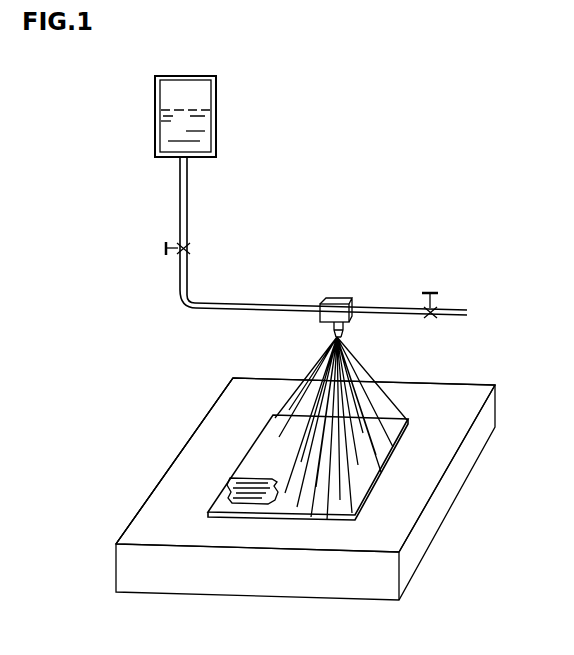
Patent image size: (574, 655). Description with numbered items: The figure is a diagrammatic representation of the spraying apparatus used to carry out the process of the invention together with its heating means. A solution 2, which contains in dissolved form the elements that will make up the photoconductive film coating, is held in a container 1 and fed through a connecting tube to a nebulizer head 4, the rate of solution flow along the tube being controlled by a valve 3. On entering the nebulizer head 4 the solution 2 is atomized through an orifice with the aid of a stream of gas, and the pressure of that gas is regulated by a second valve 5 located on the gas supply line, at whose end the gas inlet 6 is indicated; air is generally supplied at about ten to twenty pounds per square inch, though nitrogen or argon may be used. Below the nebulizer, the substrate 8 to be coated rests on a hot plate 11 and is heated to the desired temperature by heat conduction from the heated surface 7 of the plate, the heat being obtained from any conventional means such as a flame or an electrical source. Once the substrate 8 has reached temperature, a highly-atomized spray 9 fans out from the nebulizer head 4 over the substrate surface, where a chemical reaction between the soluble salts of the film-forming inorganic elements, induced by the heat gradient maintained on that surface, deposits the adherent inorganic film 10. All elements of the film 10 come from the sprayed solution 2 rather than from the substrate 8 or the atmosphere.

The container 1 is at (156, 84).
The solution 2 is at (181, 131).
The valve 3 is at (164, 247).
The nebulizer head 4 is at (331, 305).
The valve 5 is at (424, 296).
The compressed air inlet 6 is at (472, 313).
The heated surface 7 is at (251, 397).
The substrate 8 is at (251, 441).
The highly-atomized spray 9 is at (259, 467).
The photoconductive film coating 10 is at (228, 502).
The hot plate 11 is at (142, 570).